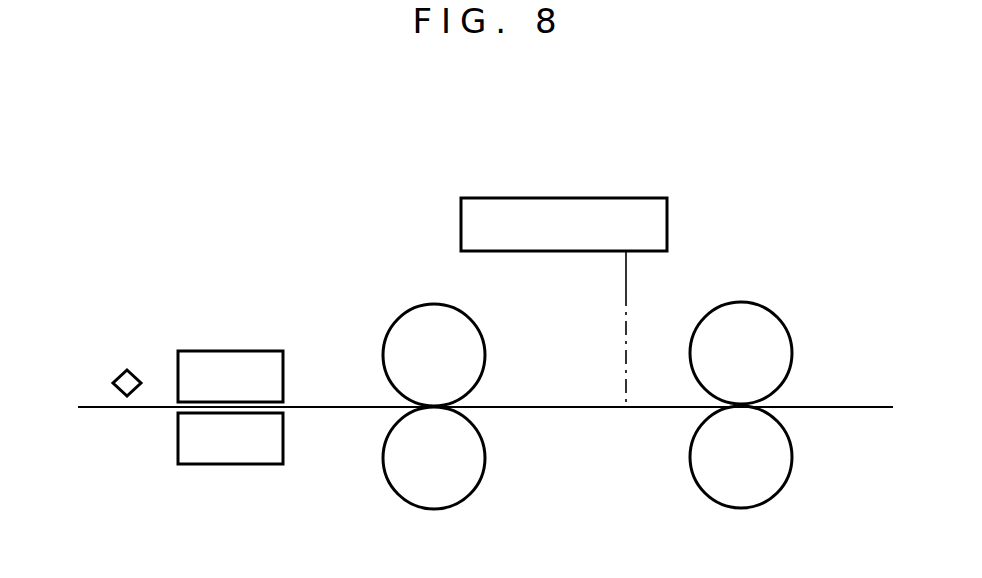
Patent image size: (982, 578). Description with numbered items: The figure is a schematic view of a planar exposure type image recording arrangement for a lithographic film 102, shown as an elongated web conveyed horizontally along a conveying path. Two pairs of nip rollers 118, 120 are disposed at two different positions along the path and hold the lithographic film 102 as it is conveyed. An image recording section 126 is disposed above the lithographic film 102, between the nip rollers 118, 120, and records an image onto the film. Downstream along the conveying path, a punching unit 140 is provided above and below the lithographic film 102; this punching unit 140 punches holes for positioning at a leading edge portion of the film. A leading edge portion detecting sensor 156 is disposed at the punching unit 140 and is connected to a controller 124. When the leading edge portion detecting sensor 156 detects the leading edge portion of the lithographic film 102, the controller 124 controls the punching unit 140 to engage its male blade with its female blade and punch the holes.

The lithographic film 102 is at (304, 407).
The nip roller 118 is at (772, 502).
The nip roller 120 is at (459, 502).
The controller 124 is at (127, 370).
The image recording section 126 is at (630, 199).
The punching unit 140 is at (227, 465).
The leading edge portion detecting sensor 156 is at (136, 374).